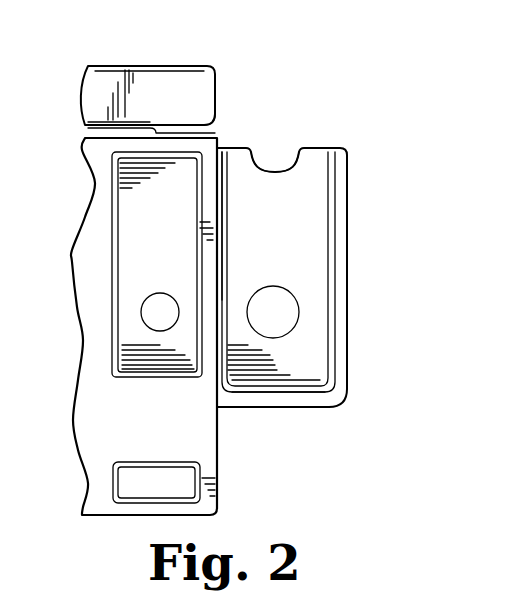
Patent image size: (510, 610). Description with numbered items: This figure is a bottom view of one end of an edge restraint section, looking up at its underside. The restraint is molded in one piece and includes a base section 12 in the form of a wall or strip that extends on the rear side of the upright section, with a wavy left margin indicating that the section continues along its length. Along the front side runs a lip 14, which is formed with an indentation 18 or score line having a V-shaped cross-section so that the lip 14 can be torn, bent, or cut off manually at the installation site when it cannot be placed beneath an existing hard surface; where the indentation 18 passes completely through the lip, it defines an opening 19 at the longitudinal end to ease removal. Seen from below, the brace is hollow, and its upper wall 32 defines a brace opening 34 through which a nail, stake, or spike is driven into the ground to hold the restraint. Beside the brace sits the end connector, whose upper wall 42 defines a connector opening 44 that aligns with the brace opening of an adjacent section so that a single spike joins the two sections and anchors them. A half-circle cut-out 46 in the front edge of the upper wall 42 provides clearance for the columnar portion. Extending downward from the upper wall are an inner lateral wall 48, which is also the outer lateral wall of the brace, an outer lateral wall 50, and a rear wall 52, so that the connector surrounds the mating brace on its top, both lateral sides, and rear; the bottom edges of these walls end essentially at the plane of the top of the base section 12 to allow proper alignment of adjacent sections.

The base section 12 is at (85, 260).
The lip 14 is at (93, 93).
The indentation 18 is at (88, 130).
The opening 19 is at (200, 130).
The upper wall 32 is at (140, 213).
The brace opening 34 is at (148, 317).
The upper wall 42 is at (313, 168).
The connector opening 44 is at (283, 320).
The half-circle cut-out 46 is at (270, 172).
The inner lateral wall 48 is at (210, 192).
The outer lateral wall 50 is at (345, 365).
The rear wall 52 is at (258, 397).